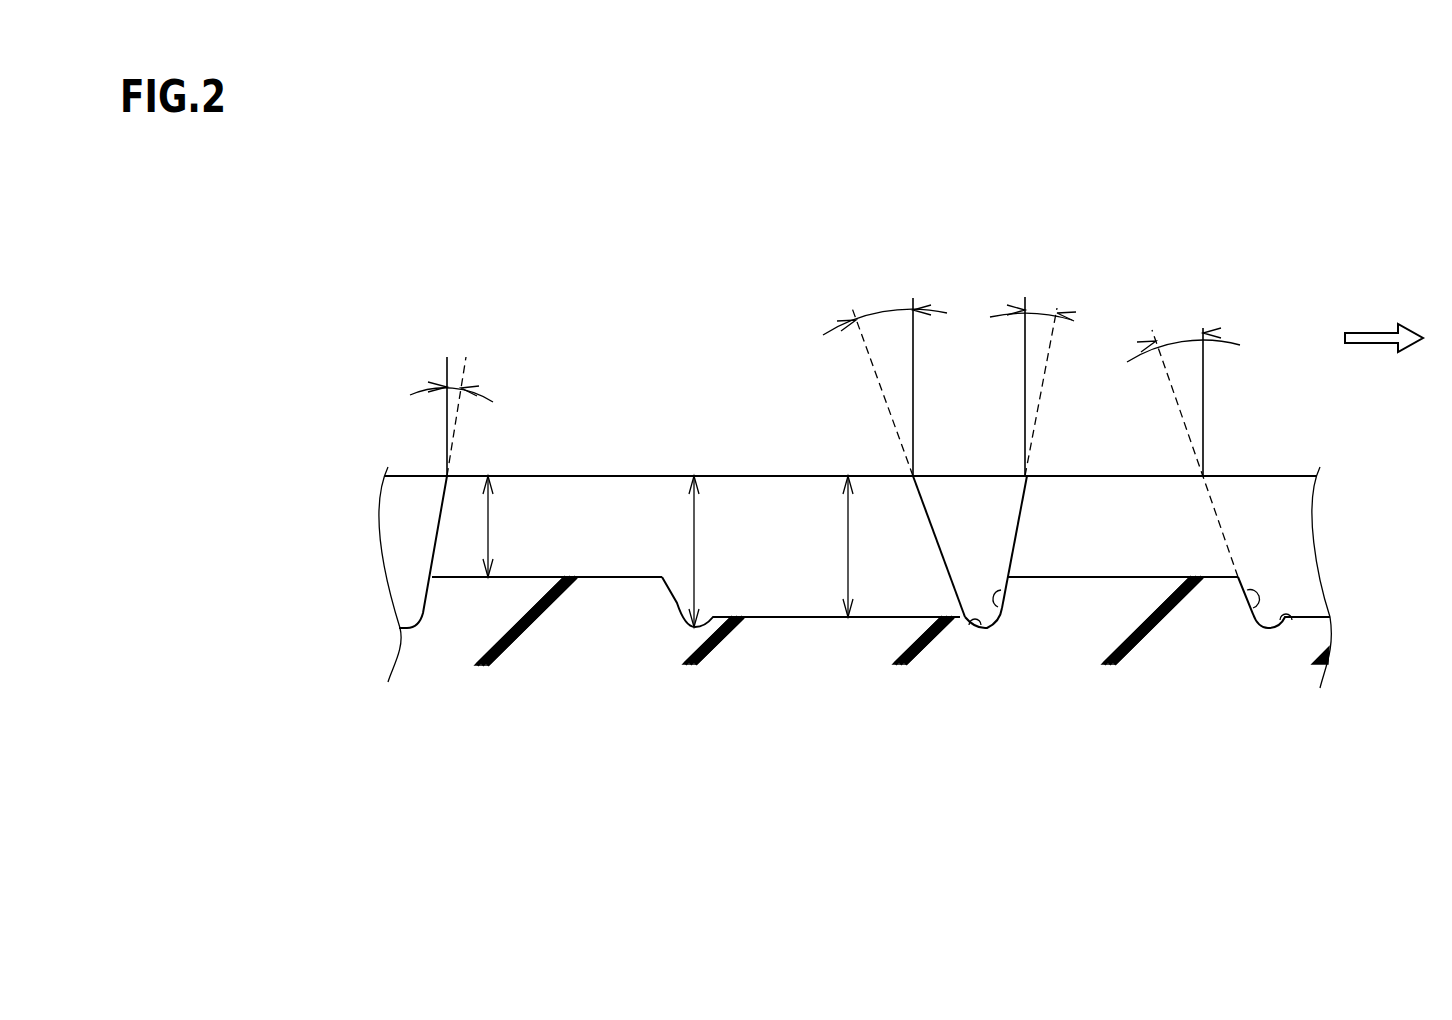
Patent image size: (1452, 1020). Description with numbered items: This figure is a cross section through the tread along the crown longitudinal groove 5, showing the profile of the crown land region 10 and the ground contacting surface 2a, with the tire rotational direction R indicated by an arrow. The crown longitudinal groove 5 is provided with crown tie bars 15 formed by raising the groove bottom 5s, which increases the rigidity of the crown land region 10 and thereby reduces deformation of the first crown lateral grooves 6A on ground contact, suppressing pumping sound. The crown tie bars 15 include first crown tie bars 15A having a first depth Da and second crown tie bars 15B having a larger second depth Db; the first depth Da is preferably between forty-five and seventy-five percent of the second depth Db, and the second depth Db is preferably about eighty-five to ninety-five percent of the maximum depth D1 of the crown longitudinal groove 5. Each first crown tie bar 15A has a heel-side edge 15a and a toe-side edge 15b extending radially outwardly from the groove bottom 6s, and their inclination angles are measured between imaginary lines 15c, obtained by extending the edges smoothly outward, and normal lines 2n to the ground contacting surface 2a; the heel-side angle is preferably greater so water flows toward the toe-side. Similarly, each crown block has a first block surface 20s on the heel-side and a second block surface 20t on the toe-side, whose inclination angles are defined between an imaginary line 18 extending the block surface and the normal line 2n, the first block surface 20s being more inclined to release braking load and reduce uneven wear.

The ground contacting surface 2a is at (795, 475).
The crown land region 10 is at (623, 475).
The second block surface 20t is at (440, 518).
The first crown lateral groove 6A is at (407, 537).
The first crown tie bar 15A is at (538, 576).
The second crown tie bar 15B is at (817, 617).
The crown tie bar 15 is at (775, 733).
The first depth Da is at (488, 525).
The maximum depth of the crown longitudinal groove D1 is at (697, 550).
The second depth Db is at (848, 548).
The first block surface 20s is at (935, 530).
The groove bottom 6s is at (968, 622).
The toe-side edge 15b is at (1000, 620).
The imaginary line 15c is at (1043, 387).
The crown longitudinal groove 5 is at (1133, 527).
The heel-side edge 15a is at (1257, 598).
The groove bottom 5s is at (1290, 622).
The imaginary line 18 is at (470, 377).
The normal line 2n is at (447, 375).
The rotational direction R is at (1396, 338).